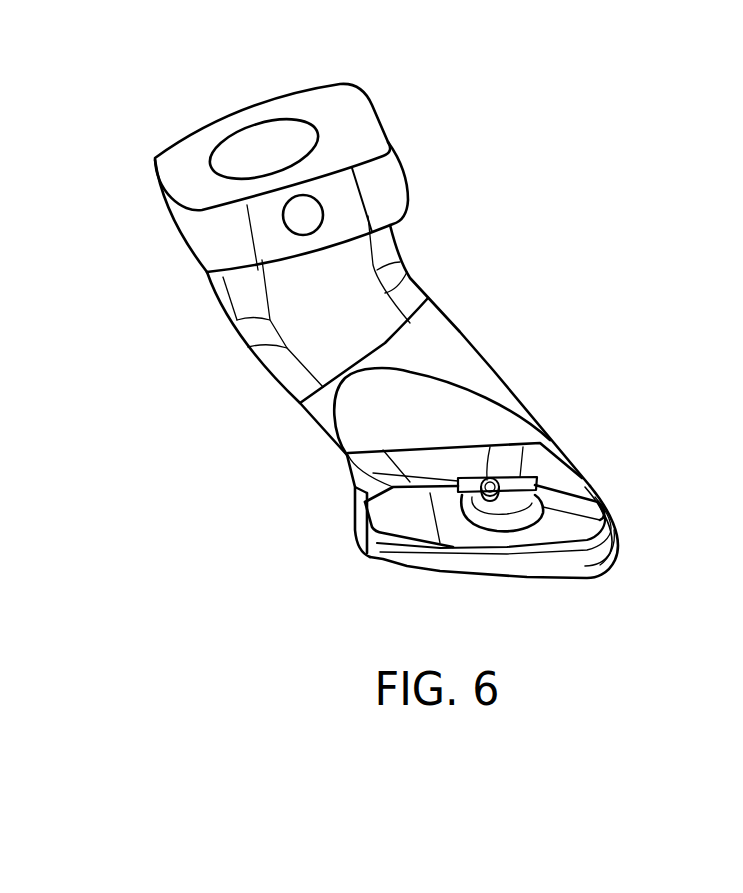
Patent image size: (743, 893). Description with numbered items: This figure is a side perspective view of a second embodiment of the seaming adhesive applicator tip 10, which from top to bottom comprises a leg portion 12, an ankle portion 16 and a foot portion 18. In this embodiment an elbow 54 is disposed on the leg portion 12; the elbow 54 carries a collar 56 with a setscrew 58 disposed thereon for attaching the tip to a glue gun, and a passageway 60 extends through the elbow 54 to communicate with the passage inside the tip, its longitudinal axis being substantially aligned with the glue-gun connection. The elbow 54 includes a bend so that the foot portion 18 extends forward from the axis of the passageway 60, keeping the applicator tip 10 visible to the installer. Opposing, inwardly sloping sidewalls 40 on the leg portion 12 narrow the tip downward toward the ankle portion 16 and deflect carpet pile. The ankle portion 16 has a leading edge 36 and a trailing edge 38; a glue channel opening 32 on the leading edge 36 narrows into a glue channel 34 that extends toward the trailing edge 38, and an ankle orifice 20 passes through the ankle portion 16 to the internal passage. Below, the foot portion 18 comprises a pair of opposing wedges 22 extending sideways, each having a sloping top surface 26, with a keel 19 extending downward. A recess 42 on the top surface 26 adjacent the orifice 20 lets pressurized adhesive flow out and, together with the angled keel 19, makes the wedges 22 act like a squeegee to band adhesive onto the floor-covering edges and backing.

The seaming adhesive applicator tip 10 is at (517, 229).
The leg portion 12 is at (480, 347).
The ankle portion 16 is at (583, 448).
The foot portion 18 is at (617, 568).
The keel 19 is at (522, 548).
The ankle orifice 20 is at (488, 486).
The wedge 22 is at (371, 550).
The sloping top surface 26 is at (580, 532).
The glue channel opening 32 is at (363, 473).
The glue channel 34 is at (563, 500).
The leading edge 36 is at (305, 541).
The trailing edge 38 is at (645, 513).
The sloping sidewall 40 is at (455, 416).
The recess 42 is at (500, 515).
The elbow 54 is at (247, 348).
The collar 56 is at (397, 158).
The setscrew 58 is at (303, 213).
The passageway 60 is at (262, 152).